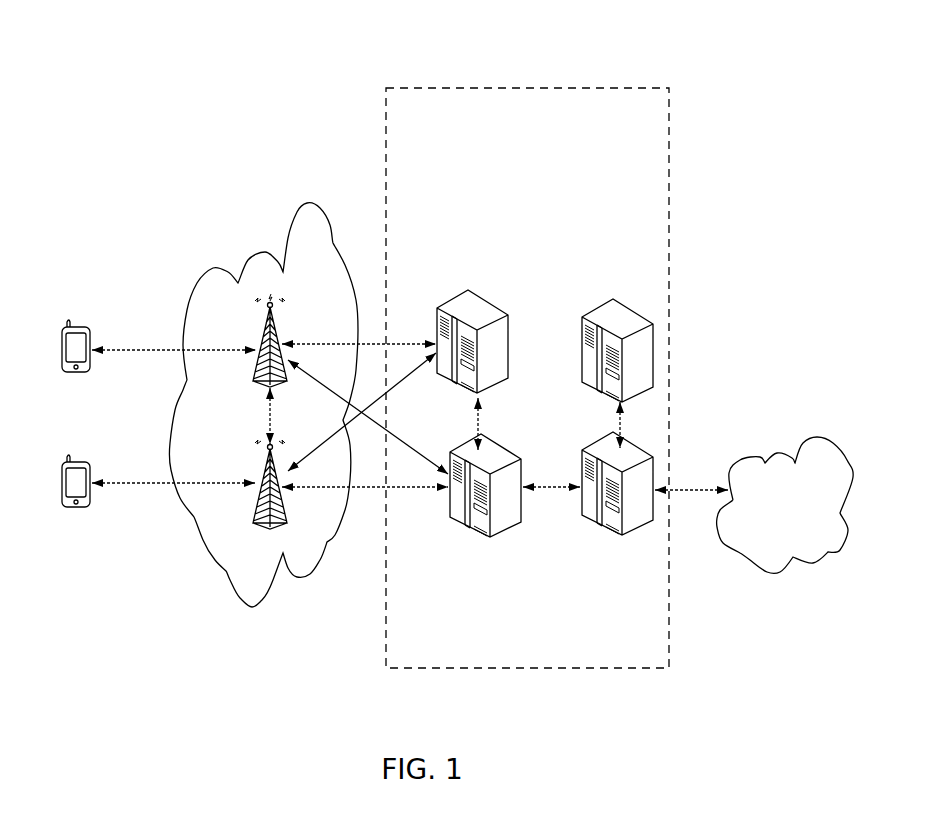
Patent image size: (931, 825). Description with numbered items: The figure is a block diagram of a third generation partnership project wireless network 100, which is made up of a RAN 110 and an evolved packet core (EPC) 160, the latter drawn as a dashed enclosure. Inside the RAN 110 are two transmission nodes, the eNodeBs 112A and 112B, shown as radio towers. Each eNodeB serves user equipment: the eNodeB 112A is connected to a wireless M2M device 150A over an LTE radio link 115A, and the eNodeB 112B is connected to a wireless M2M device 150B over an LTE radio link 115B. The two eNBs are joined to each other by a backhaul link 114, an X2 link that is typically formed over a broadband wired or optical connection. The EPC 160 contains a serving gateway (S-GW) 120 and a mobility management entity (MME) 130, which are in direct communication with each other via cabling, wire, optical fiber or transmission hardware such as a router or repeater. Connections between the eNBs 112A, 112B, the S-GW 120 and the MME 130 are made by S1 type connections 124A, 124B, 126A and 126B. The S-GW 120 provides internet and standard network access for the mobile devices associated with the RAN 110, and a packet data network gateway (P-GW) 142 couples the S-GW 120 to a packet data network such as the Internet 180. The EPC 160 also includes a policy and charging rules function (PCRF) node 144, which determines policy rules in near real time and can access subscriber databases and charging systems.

The wireless network 100 is at (338, 48).
The RAN 110 is at (300, 305).
The eNodeB 112A is at (255, 335).
The eNodeB 112B is at (287, 508).
The backhaul link 114 is at (269, 430).
The LTE radio link 115A is at (137, 350).
The LTE radio link 115B is at (142, 483).
The serving gateway (S-GW) 120 is at (480, 538).
The S1 type connection 124A is at (412, 345).
The S1 type connection 124B is at (418, 360).
The S1 type connection 126A is at (368, 415).
The S1 type connection 126B is at (418, 488).
The mobility management entity (MME) 130 is at (442, 304).
The packet data network gateway (P-GW) 142 is at (600, 535).
The policy and charging rules function (PCRF) node 144 is at (619, 308).
The wireless M2M device 150A is at (68, 326).
The wireless M2M device 150B is at (82, 508).
The evolved packet core (EPC) 160 is at (570, 150).
The Internet 180 is at (772, 527).